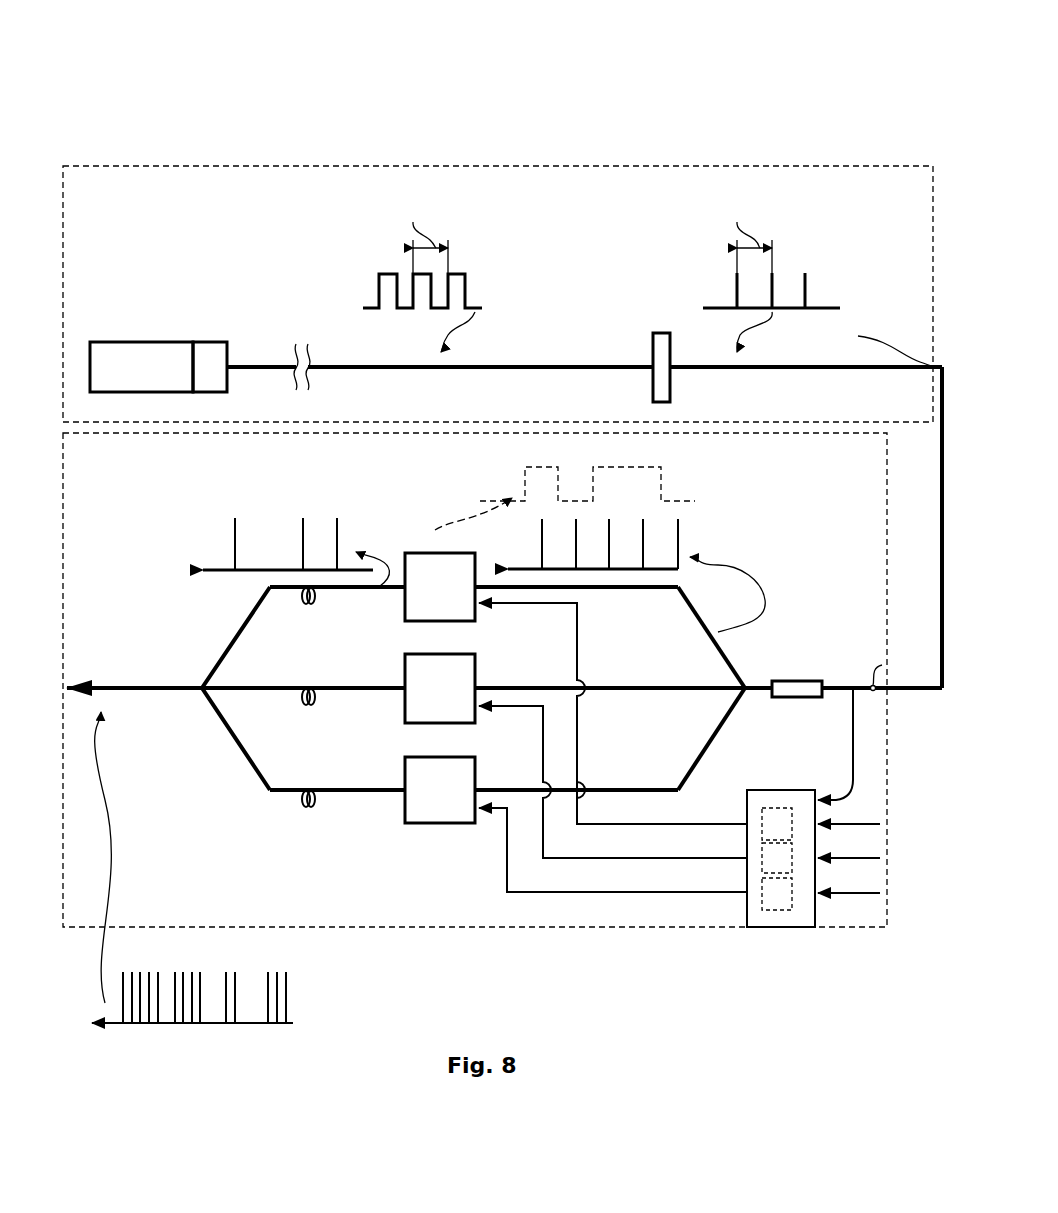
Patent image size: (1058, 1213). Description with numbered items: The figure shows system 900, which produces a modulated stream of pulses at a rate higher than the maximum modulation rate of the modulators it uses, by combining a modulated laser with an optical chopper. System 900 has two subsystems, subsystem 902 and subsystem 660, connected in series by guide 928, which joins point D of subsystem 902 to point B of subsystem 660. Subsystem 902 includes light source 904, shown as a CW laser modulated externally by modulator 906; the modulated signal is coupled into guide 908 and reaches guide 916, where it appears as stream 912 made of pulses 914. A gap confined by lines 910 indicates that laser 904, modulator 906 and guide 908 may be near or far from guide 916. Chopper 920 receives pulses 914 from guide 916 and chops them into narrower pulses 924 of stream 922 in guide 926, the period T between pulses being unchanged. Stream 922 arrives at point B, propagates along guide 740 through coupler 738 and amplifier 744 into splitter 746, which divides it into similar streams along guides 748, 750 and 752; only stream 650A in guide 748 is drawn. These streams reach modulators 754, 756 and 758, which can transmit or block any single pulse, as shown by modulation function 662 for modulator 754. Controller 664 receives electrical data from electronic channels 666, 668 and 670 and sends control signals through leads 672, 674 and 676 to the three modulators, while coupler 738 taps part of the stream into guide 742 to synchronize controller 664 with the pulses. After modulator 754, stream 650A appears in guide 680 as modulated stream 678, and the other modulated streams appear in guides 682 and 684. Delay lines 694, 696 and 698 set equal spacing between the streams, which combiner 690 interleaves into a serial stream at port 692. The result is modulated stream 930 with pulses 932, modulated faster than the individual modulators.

The system 900 is at (480, 145).
The subsystem 902 is at (311, 166).
The light source 904 is at (113, 342).
The modulator 906 is at (207, 342).
The guide 908 is at (253, 370).
The lines 910 is at (303, 327).
The stream 912 is at (365, 307).
The pulses 914 is at (473, 275).
The guide 916 is at (487, 370).
The chopper 920 is at (660, 333).
The stream 922 is at (716, 308).
The pulses 924 is at (806, 285).
The guide 926 is at (818, 370).
The guide 928 is at (942, 465).
The subsystem 660 is at (63, 578).
The modulation function 662 is at (665, 500).
The stream 650A is at (678, 545).
The modulated stream 678 is at (235, 540).
The guide 680 is at (240, 622).
The guide 682 is at (365, 692).
The guide 684 is at (365, 794).
The combiner 690 is at (200, 692).
The port 692 is at (122, 692).
The delay line 694 is at (310, 605).
The delay line 696 is at (310, 706).
The delay line 698 is at (310, 808).
The modulator 754 is at (468, 622).
The modulator 756 is at (468, 724).
The modulator 758 is at (408, 824).
The guide 748 is at (690, 612).
The guide 750 is at (670, 692).
The guide 752 is at (705, 750).
The splitter 746 is at (748, 692).
The amplifier 744 is at (786, 692).
The guide 740 is at (825, 680).
The coupler 738 is at (875, 692).
The guide 742 is at (853, 725).
The controller 664 is at (765, 928).
The electronic channel 666 is at (875, 826).
The electronic channel 668 is at (875, 860).
The electronic channel 670 is at (875, 895).
The lead 672 is at (650, 826).
The lead 674 is at (658, 860).
The lead 676 is at (660, 894).
The modulated stream 930 is at (262, 1025).
The pulses 932 is at (290, 990).